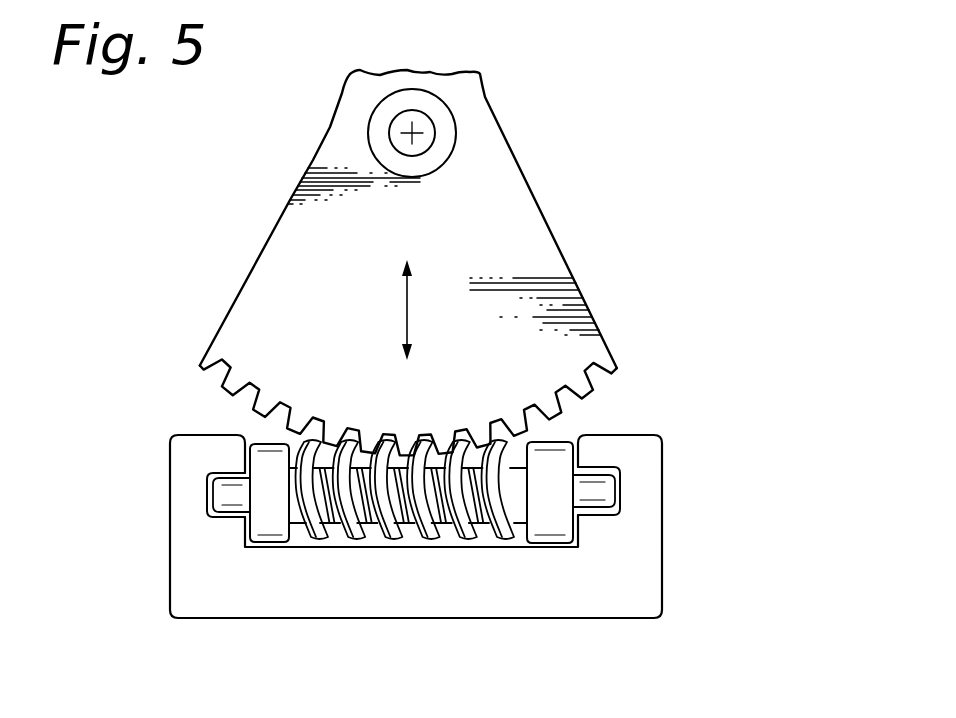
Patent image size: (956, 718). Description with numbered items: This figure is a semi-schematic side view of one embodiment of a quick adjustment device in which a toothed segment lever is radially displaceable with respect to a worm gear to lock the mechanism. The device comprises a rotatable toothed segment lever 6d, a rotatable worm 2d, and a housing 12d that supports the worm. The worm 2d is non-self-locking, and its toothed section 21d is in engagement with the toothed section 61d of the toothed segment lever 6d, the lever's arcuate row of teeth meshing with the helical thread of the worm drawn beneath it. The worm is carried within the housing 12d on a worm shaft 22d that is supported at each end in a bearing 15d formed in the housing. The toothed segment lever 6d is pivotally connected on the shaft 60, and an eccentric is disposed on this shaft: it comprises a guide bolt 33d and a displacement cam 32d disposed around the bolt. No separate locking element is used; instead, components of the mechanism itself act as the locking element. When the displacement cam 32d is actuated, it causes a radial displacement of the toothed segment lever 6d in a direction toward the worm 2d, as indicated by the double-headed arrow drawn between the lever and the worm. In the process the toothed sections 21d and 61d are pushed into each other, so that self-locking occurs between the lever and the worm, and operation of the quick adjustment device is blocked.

The shaft 60 is at (424, 121).
The displacement cam 32d is at (445, 132).
The guide bolt 33d is at (425, 155).
The toothed segment lever 6d is at (302, 185).
The toothed section 61d is at (303, 392).
The worm shaft 22d is at (215, 493).
The bearing 15d is at (203, 522).
The housing 12d is at (212, 577).
The toothed section 21d is at (405, 558).
The worm 2d is at (411, 551).